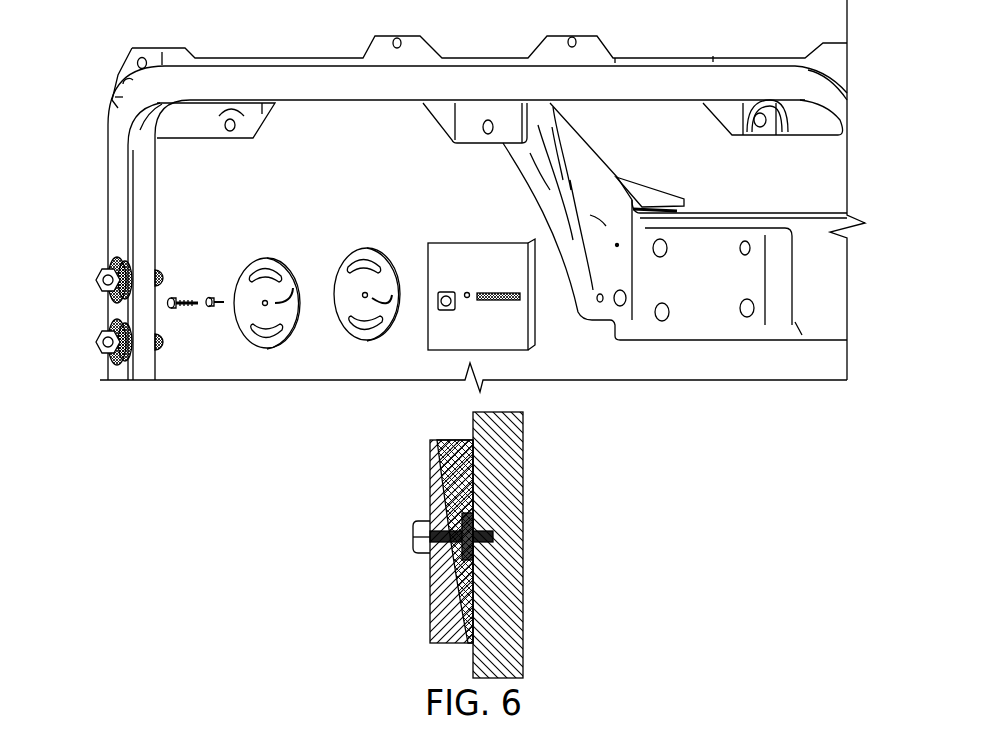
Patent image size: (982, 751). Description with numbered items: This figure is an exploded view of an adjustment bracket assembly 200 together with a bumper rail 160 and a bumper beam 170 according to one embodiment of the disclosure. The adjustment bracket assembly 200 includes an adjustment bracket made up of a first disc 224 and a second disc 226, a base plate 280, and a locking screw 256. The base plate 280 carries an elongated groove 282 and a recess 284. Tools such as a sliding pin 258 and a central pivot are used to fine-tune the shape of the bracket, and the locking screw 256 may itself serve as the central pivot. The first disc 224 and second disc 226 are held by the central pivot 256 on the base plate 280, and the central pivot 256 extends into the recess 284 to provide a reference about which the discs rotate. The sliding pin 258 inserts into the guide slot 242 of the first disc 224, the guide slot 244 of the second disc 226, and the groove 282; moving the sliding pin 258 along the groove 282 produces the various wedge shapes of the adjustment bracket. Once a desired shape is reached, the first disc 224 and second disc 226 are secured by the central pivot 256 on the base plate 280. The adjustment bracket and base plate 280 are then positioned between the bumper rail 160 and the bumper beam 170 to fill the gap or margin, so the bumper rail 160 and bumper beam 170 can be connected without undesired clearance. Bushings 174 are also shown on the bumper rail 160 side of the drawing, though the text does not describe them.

The bumper rail 160 is at (282, 87).
The bumper beam 170 is at (781, 323).
The bushing 174 is at (97, 280).
The adjustment bracket assembly 200 is at (584, 508).
The first disc 224 is at (243, 292).
The second disc 226 is at (390, 268).
The guide slot 242 is at (300, 325).
The guide slot 244 is at (396, 312).
The locking screw 256 is at (191, 298).
The sliding pin 258 is at (218, 308).
The base plate 280 is at (476, 240).
The elongated groove 282 is at (520, 300).
The recess 284 is at (468, 292).